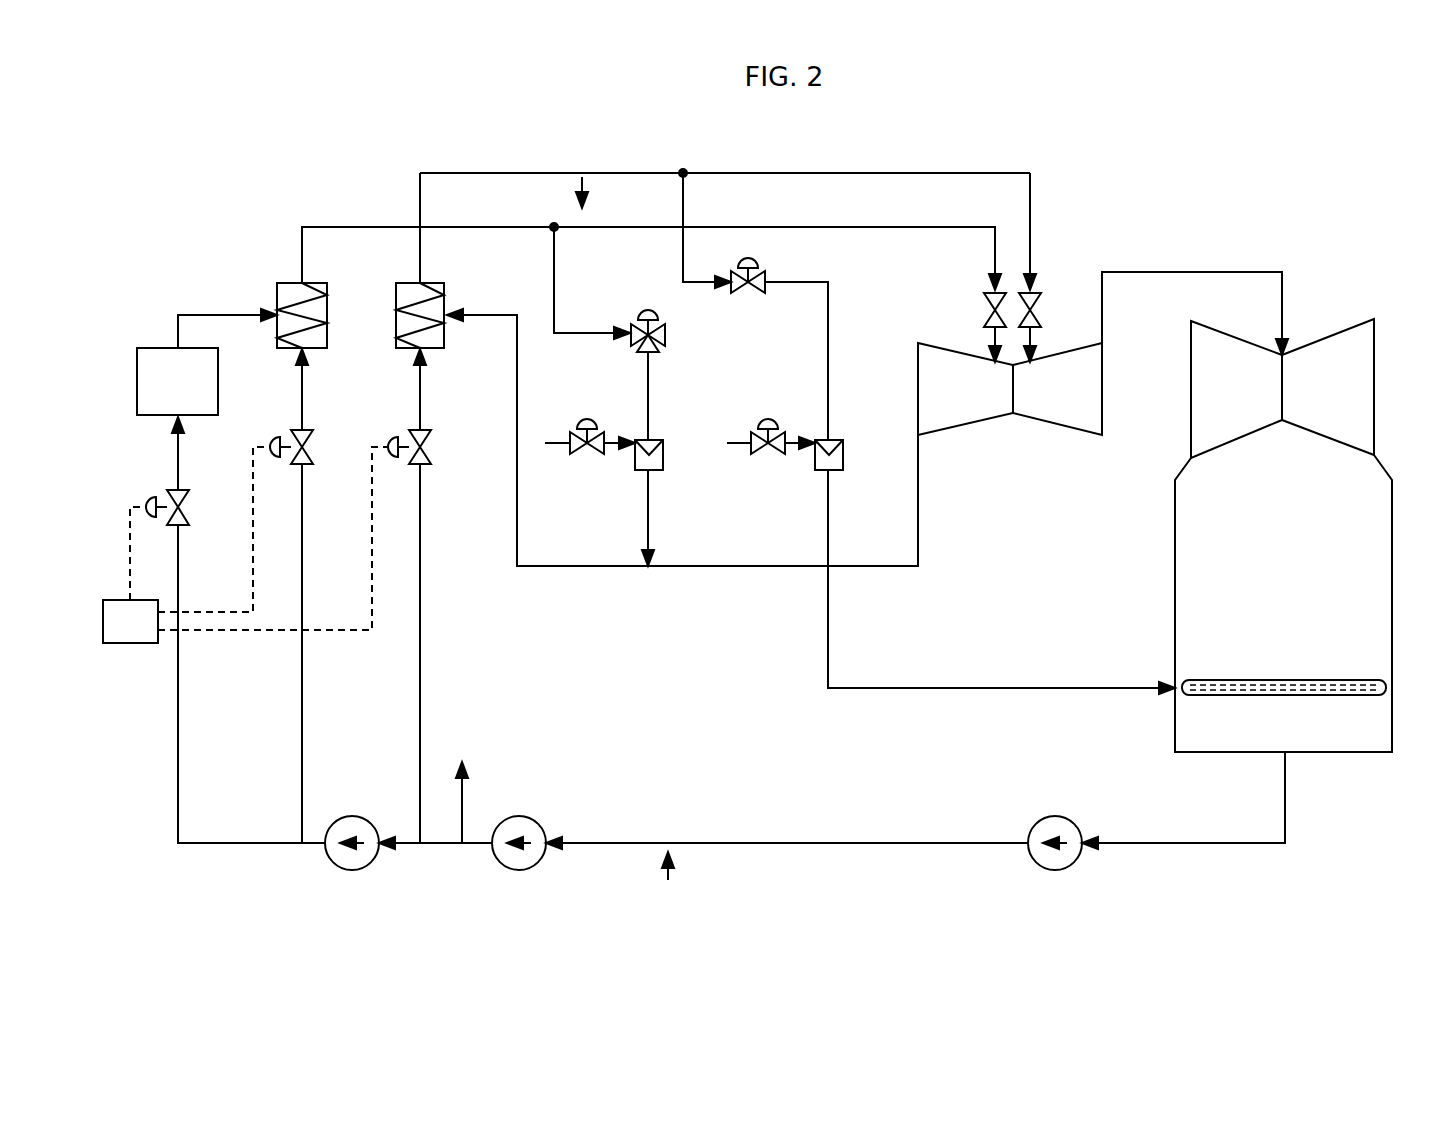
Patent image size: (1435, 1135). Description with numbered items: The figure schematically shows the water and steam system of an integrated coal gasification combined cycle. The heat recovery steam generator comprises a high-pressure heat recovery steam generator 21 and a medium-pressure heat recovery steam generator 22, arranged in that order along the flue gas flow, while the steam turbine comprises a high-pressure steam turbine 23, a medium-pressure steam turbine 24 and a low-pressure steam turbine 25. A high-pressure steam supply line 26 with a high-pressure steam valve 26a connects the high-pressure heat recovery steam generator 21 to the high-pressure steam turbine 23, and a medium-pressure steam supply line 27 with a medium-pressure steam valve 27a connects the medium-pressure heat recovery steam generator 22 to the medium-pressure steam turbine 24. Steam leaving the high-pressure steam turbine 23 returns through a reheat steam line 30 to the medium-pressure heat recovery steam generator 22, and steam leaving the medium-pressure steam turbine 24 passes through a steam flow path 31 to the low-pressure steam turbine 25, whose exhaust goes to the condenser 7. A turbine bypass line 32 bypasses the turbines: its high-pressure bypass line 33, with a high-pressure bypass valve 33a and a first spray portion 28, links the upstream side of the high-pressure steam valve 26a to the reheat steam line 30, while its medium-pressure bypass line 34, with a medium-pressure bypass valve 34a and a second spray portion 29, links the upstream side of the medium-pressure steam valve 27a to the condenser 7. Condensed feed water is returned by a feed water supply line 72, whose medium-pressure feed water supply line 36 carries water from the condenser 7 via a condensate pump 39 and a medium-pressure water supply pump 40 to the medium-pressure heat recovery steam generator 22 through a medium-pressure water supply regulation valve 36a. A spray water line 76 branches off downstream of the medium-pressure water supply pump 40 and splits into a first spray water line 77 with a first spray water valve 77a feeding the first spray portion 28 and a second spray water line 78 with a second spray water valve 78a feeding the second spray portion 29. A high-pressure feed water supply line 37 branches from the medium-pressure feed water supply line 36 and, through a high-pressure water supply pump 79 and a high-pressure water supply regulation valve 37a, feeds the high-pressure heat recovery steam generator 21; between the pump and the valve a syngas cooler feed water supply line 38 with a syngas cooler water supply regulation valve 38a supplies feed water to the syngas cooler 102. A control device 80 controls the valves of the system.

The condenser 7 is at (1393, 590).
The high-pressure heat recovery steam generator 21 is at (288, 282).
The medium-pressure heat recovery steam generator 22 is at (396, 315).
The high-pressure steam turbine 23 is at (960, 436).
The medium-pressure steam turbine 24 is at (1062, 432).
The low-pressure steam turbine 25 is at (1375, 395).
The high-pressure steam supply line 26 is at (870, 228).
The high-pressure steam valve 26a is at (984, 305).
The medium-pressure steam supply line 27 is at (868, 172).
The medium-pressure steam valve 27a is at (1040, 300).
The first spray portion 28 is at (664, 458).
The second spray portion 29 is at (845, 462).
The reheat steam line 30 is at (746, 567).
The steam flow path 31 is at (1190, 271).
The turbine bypass line 32 is at (582, 176).
The high-pressure bypass line 33 is at (646, 378).
The high-pressure bypass valve 33a is at (648, 310).
The medium-pressure bypass line 34 is at (827, 320).
The medium-pressure bypass valve 34a is at (760, 260).
The medium-pressure feed water supply line 36 is at (422, 628).
The medium-pressure water supply regulation valve 36a is at (398, 440).
The high-pressure feed water supply line 37 is at (304, 686).
The high-pressure water supply regulation valve 37a is at (280, 440).
The syngas cooler feed water supply line 38 is at (177, 773).
The syngas cooler water supply regulation valve 38a is at (156, 500).
The condensate pump 39 is at (1055, 815).
The medium-pressure water supply pump 40 is at (519, 815).
The feed water supply line 72 is at (668, 881).
The spray water line 76 is at (465, 785).
The first spray water line 77 is at (558, 444).
The first spray water valve 77a is at (577, 420).
The second spray water line 78 is at (735, 443).
The second spray water valve 78a is at (768, 420).
The high-pressure water supply pump 79 is at (352, 815).
The control device 80 is at (135, 644).
The syngas cooler 102 is at (157, 347).